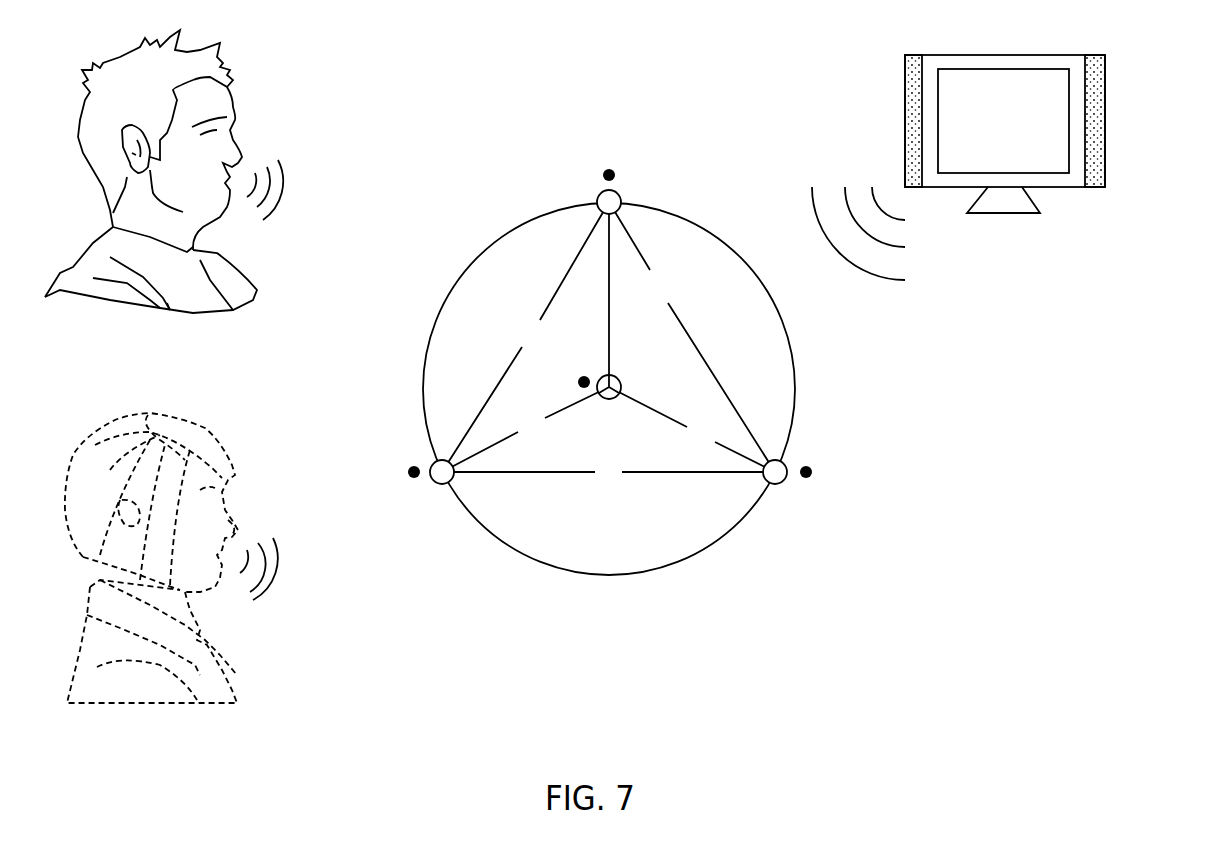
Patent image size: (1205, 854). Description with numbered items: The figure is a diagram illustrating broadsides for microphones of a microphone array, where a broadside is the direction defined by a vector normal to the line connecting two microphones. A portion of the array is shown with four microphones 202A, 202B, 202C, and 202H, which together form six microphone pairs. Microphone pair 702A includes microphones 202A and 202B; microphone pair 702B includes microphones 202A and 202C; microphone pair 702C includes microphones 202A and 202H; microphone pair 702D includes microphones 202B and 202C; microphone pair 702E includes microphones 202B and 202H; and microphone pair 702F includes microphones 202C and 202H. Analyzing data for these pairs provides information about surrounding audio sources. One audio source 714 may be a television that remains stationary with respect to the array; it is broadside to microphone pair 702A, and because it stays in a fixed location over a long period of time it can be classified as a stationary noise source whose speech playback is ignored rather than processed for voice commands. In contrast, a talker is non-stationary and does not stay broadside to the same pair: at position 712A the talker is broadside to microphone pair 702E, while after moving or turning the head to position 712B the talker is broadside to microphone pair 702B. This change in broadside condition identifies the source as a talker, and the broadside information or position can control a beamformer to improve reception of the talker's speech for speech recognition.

The microphone 202A is at (620, 197).
The microphone 202B is at (777, 480).
The microphone 202C is at (440, 480).
The microphone 202H is at (605, 405).
The microphone pair 702A is at (718, 378).
The microphone pair 702B is at (543, 307).
The microphone pair 702C is at (608, 348).
The microphone pair 702D is at (673, 474).
The microphone pair 702E is at (645, 402).
The microphone pair 702F is at (472, 455).
The talker position 712A is at (220, 667).
The talker position 712B is at (233, 100).
The audio source 714 is at (1105, 128).